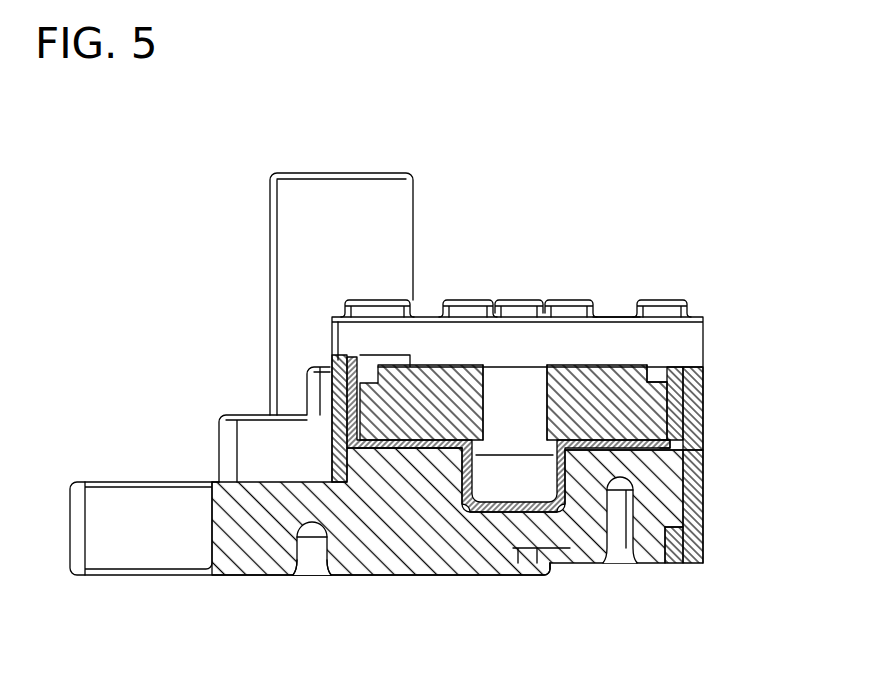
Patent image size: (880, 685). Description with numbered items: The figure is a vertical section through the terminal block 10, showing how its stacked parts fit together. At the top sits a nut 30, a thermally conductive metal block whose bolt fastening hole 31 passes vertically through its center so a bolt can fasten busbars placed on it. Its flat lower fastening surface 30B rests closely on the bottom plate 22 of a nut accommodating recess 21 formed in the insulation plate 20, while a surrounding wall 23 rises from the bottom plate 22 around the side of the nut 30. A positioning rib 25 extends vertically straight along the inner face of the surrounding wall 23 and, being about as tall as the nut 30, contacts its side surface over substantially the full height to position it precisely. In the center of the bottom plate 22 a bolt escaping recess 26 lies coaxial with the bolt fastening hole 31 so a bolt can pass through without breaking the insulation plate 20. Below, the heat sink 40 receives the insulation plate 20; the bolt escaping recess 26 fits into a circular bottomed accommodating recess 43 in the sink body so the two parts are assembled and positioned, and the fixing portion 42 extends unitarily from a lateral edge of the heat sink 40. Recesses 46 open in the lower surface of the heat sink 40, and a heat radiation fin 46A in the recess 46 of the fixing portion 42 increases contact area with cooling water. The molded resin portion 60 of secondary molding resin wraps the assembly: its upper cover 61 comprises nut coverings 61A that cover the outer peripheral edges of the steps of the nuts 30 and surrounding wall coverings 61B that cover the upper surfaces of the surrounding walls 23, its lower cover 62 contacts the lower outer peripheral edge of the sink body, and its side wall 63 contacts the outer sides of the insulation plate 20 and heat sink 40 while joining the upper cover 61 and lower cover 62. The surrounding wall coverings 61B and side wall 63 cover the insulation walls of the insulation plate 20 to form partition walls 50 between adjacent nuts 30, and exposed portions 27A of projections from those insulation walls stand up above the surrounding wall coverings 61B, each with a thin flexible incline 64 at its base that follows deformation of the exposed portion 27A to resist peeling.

The terminal block 10 is at (149, 284).
The insulation plate 20 is at (484, 420).
The nut accommodating recess 21 is at (368, 405).
The bottom plate 22 is at (433, 450).
The surrounding wall 23 is at (683, 423).
The positioning rib 25 is at (352, 365).
The bolt escaping recess 26 is at (553, 482).
The exposed portion 27A is at (470, 305).
The nut 30 is at (554, 343).
The lower fastening surface 30B is at (660, 445).
The bolt fastening hole 31 is at (543, 402).
The heat sink 40 is at (434, 420).
The fixing portion 42 is at (133, 560).
The accommodating recess 43 is at (543, 562).
The recess 46 is at (308, 560).
The heat radiation fin 46A is at (348, 567).
The partition wall 50 is at (610, 340).
The molded resin portion 60 is at (565, 413).
The upper cover 61 is at (565, 399).
The nut covering 61A is at (663, 372).
The surrounding wall covering 61B is at (684, 368).
The lower cover 62 is at (682, 567).
The side wall 63 is at (700, 522).
The incline 64 is at (603, 303).